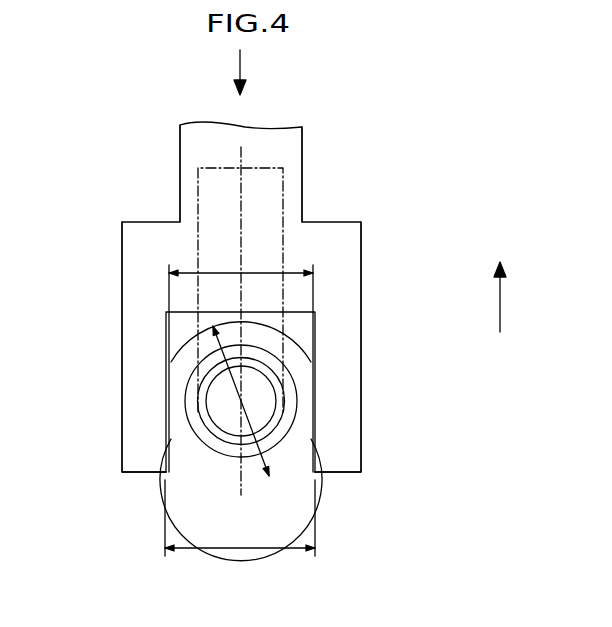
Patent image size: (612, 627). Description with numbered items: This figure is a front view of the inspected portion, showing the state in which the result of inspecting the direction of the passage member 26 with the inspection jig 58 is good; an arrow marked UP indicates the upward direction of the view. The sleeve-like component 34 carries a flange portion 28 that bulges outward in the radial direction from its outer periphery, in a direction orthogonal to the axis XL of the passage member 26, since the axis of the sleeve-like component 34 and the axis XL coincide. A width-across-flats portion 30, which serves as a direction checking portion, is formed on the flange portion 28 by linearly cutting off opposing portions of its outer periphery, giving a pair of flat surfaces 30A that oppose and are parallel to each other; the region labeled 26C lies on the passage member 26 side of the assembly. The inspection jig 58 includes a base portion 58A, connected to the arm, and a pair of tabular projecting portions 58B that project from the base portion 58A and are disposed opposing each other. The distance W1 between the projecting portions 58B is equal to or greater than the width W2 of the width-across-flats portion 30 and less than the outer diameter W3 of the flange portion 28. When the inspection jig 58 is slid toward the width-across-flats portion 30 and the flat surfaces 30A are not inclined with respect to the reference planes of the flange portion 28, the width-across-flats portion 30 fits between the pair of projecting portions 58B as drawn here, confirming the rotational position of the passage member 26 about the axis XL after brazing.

The inspection jig 58 is at (311, 158).
The base portion 58A is at (303, 220).
The projecting portions 58B is at (143, 472).
The sleeve-like component 34 is at (190, 472).
The flange portion 28 is at (294, 341).
The flat surfaces 30A is at (186, 388).
The width-across-flats portion 30 is at (290, 415).
The passage member 26 is at (241, 401).
The shaft end portion 26C is at (262, 168).
The axis XL is at (241, 401).
The distance W1 is at (240, 550).
The width W2 is at (225, 272).
The outer diameter W3 is at (258, 468).
The upward direction UP is at (503, 297).